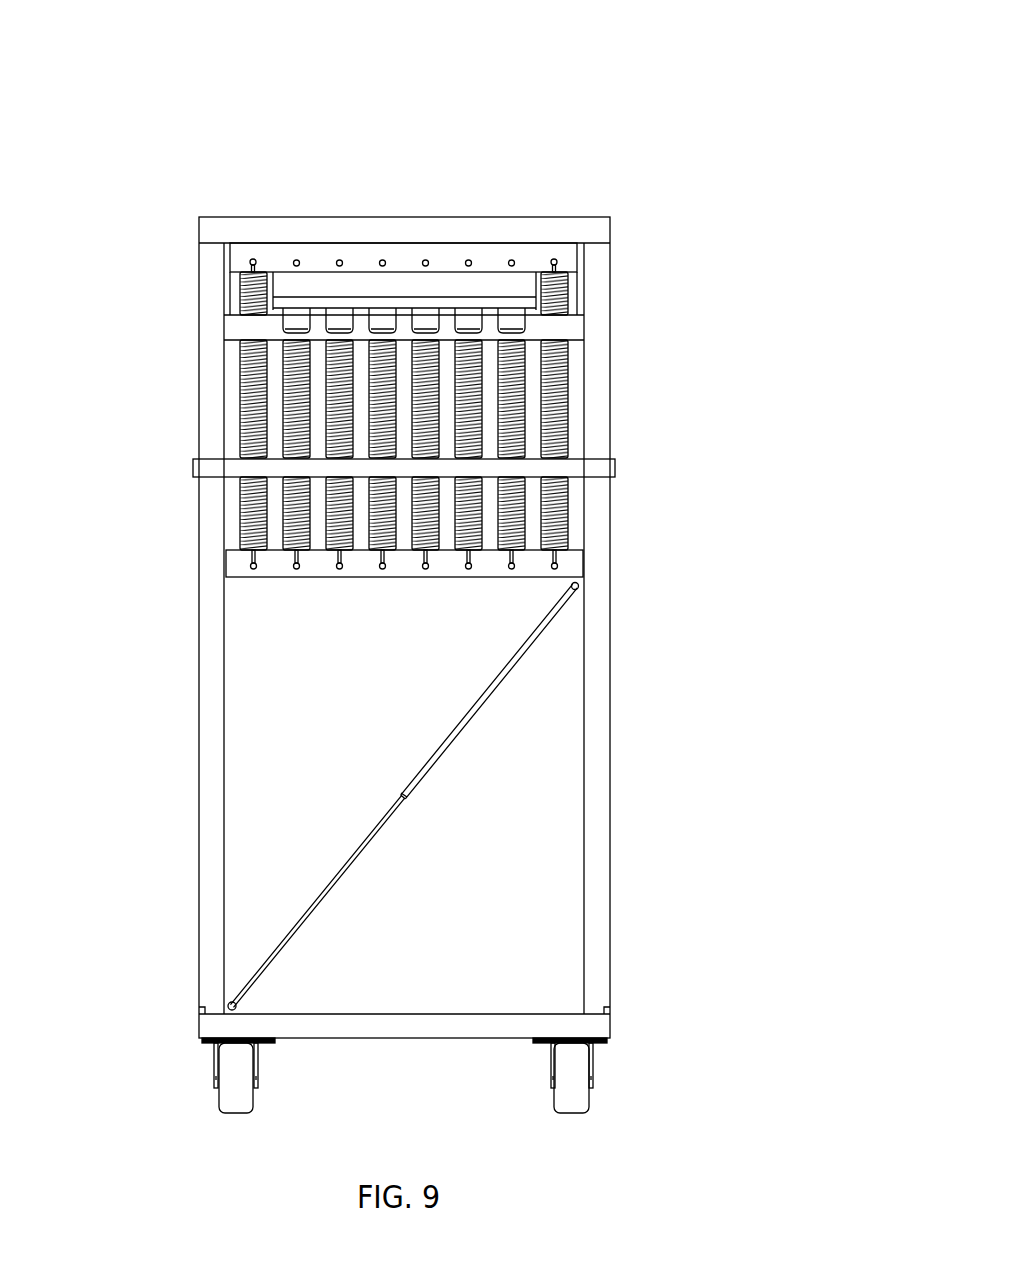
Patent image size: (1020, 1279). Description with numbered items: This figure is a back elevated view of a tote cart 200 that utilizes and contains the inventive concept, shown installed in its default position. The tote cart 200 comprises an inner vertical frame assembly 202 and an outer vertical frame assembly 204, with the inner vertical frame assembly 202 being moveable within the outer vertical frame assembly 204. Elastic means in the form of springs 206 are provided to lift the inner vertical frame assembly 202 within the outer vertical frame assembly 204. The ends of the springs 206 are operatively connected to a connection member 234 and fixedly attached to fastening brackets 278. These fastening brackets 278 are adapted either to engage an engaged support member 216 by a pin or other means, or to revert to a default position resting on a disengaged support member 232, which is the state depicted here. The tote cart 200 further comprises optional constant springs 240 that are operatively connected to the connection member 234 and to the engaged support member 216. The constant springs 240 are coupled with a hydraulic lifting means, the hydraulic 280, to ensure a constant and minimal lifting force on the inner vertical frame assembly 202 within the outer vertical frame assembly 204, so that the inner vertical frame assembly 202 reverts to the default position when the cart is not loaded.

The tote cart 200 is at (677, 157).
The inner vertical frame assembly 202 is at (382, 596).
The outer vertical frame assembly 204 is at (640, 328).
The springs 206 is at (380, 432).
The engaged support member 216 is at (547, 252).
The disengaged support member 232 is at (547, 331).
The connection member 234 is at (497, 570).
The constant springs 240 is at (253, 369).
The fastening brackets 278 is at (382, 320).
The hydraulic 280 is at (478, 710).